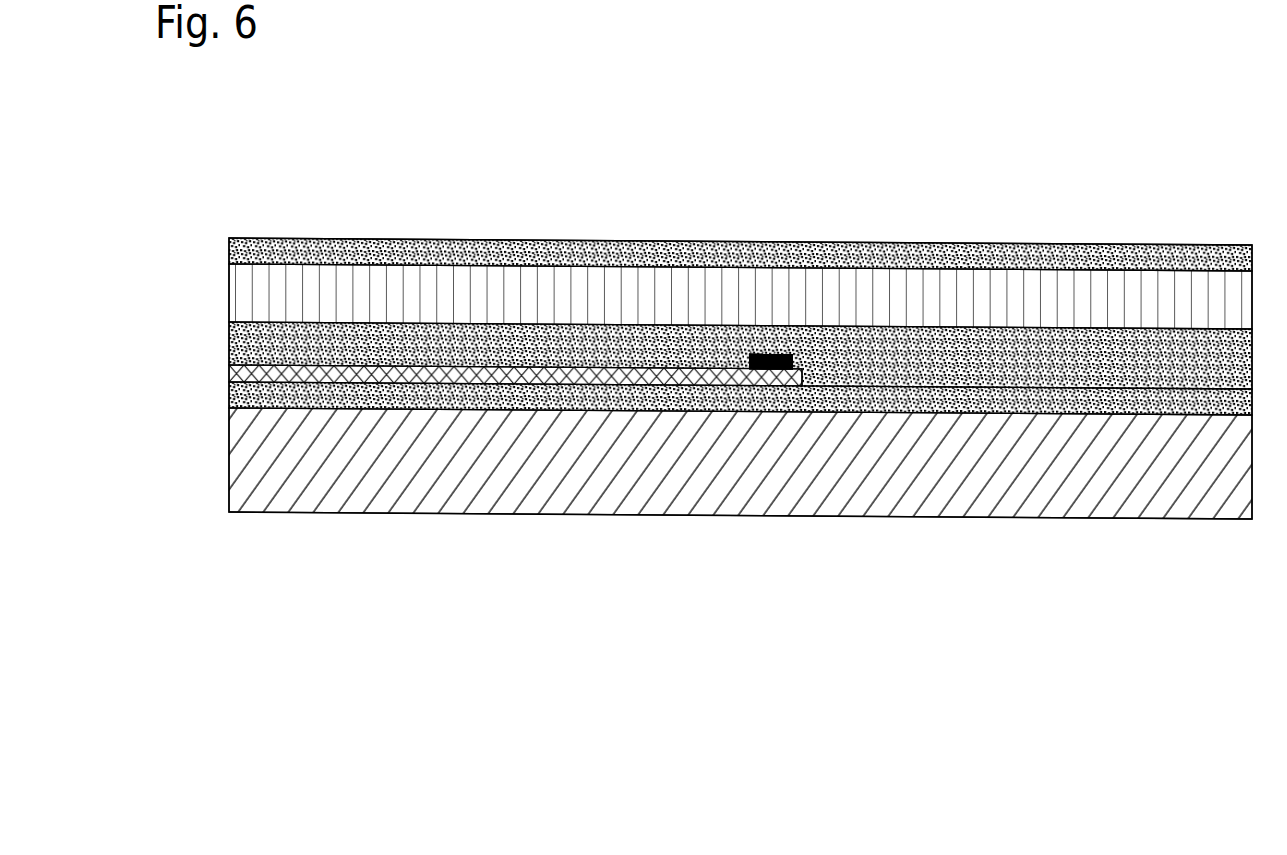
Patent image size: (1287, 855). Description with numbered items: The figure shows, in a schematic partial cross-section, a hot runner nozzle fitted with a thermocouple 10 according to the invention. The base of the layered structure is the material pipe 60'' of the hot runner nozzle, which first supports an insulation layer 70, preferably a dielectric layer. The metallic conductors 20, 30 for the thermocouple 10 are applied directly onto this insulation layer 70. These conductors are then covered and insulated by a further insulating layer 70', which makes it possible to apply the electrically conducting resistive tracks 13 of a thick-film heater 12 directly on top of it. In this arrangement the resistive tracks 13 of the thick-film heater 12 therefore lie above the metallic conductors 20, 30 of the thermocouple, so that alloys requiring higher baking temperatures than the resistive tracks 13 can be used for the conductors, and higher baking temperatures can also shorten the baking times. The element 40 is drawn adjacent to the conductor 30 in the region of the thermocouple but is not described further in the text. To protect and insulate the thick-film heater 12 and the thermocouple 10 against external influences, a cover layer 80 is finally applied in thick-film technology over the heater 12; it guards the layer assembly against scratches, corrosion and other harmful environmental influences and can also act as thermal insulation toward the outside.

The thermocouple 10 is at (668, 321).
The thick-film heater 12 is at (1040, 235).
The resistive tracks 13 is at (222, 277).
The metallic conductor 20 is at (225, 370).
The metallic conductor 30 is at (747, 345).
The contact / printed element 40 is at (783, 345).
The insulation layer 70 is at (692, 424).
The further insulating layer 70' is at (692, 346).
The cover layer 80 is at (338, 222).
The material pipe 60'' is at (692, 467).